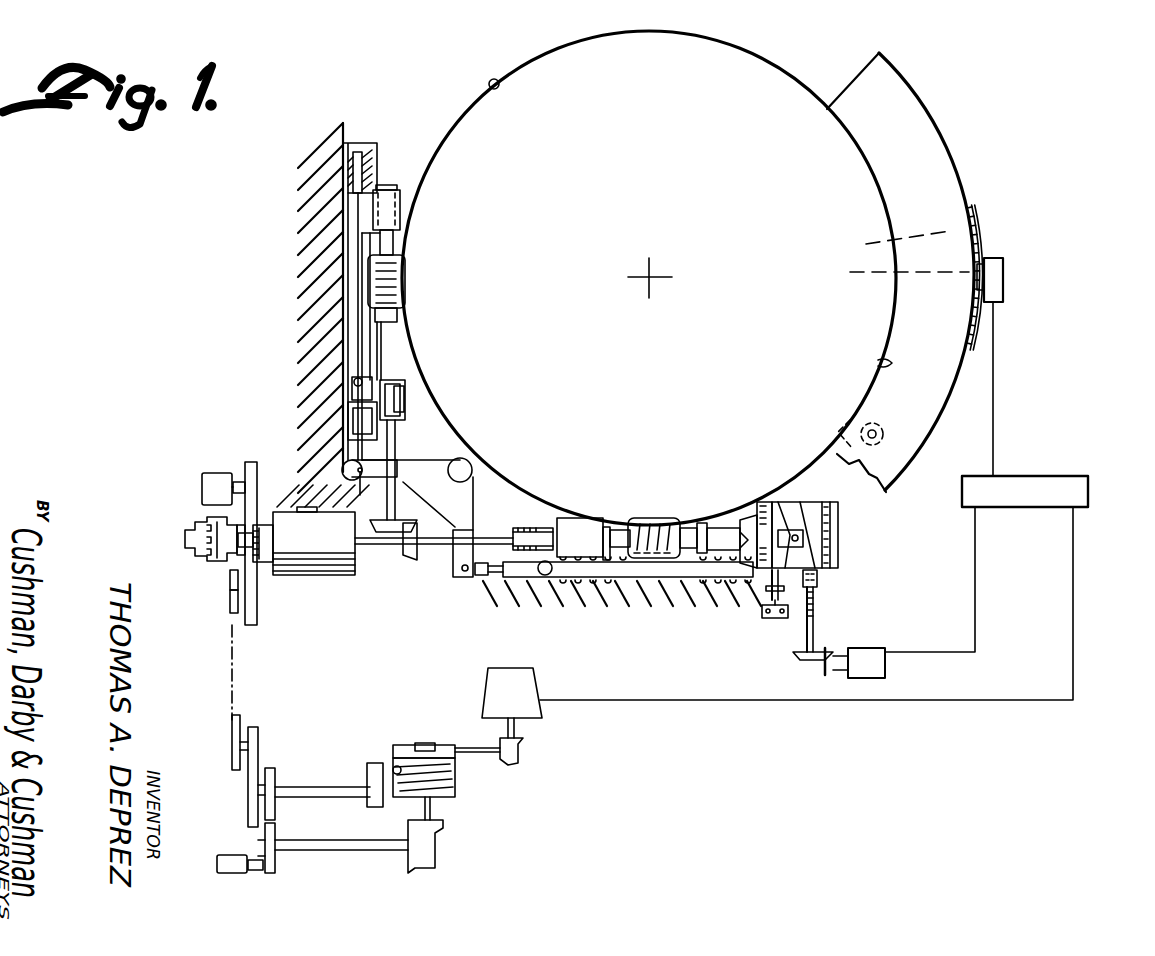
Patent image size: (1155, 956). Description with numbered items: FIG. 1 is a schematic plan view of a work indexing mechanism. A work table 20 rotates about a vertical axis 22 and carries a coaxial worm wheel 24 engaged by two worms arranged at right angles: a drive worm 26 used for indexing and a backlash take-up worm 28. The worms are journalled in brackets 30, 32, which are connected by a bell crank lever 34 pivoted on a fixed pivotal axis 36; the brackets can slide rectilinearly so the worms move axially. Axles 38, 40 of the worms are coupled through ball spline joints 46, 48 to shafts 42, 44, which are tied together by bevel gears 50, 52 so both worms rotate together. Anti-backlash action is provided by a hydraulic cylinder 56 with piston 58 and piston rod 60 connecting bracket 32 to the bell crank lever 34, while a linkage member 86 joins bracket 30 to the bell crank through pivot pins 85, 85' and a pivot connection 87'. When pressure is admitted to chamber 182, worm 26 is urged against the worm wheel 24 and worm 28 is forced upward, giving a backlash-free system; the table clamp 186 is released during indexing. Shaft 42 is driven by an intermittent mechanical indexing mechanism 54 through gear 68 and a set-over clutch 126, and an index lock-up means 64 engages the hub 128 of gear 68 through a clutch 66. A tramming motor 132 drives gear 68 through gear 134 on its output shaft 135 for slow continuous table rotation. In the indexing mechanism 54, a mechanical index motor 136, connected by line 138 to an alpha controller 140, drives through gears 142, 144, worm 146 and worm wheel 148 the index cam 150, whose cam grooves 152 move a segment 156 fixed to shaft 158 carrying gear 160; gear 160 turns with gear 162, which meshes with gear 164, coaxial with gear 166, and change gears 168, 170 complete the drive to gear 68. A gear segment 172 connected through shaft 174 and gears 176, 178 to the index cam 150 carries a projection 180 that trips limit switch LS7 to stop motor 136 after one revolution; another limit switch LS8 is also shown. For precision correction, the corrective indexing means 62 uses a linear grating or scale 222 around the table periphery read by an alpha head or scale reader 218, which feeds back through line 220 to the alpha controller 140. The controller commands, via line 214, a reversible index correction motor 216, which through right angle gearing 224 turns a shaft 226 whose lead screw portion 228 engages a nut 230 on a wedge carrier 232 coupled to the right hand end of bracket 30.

The work table 20 is at (945, 118).
The vertical axis 22 is at (655, 283).
The worm wheel 24 is at (878, 363).
The drive worm 26 is at (650, 518).
The backlash take-up worm 28 is at (405, 268).
The bracket 30 is at (673, 604).
The bracket 32 is at (375, 175).
The bell crank lever 34 is at (432, 452).
The fixed pivotal axis 36 is at (468, 478).
The axle 38 is at (618, 518).
The axle 40 is at (397, 315).
The shaft 42 is at (479, 527).
The shaft 44 is at (396, 425).
The ball spline joint 46 is at (538, 518).
The ball spline joint 48 is at (400, 395).
The bevel gear 50 is at (410, 560).
The bevel gear 52 is at (390, 532).
The mechanical indexing mechanism 54 is at (362, 738).
The hydraulic cylinder 56 is at (347, 420).
The piston 58 is at (347, 423).
The piston rod 60 is at (342, 465).
The corrective indexing means 62 is at (835, 686).
The index lock-up means 64 is at (325, 577).
The clutch 66 is at (266, 565).
The gear 68 is at (250, 523).
The pivot pin 85 is at (549, 601).
The pivot 85' is at (305, 378).
The linkage member 86 is at (515, 580).
The pin 87' is at (371, 488).
The set-over clutch 126 is at (215, 558).
The hub 128 is at (233, 590).
The tramming motor 132 is at (210, 473).
The gear 134 is at (257, 470).
The output shaft 135 is at (234, 467).
The mechanical index motor 136 is at (527, 683).
The line 138 is at (806, 604).
The alpha controller 140 is at (1080, 476).
The gear 142 is at (523, 745).
The gear 144 is at (512, 765).
The worm 146 is at (428, 743).
The worm wheel 148 is at (398, 745).
The index cam 150 is at (453, 770).
The cam grooves 152 is at (442, 795).
The segment 156 is at (367, 800).
The shaft 158 is at (333, 780).
The gear 160 is at (275, 775).
The gear 162 is at (247, 788).
The gear 164 is at (258, 745).
The gear 166 is at (232, 718).
The gear 168 is at (233, 613).
The index change gear 170 is at (255, 625).
The gear segment 172 is at (275, 830).
The shaft 174 is at (360, 850).
The gear 176 is at (418, 868).
The gear 178 is at (443, 835).
The actuator 180 is at (265, 870).
The chamber 182 is at (330, 412).
The clamp 186 is at (883, 424).
The line 214 is at (975, 565).
The index correction motor 216 is at (885, 655).
The alpha head 218 is at (1003, 285).
The line 220 is at (993, 432).
The linear grating 222 is at (977, 218).
The right angle gearing 224 is at (823, 664).
The shaft 226 is at (817, 650).
The lead screw portion 228 is at (813, 600).
The nut 230 is at (817, 578).
The wedge carrier 232 is at (838, 553).
The limit switch LS7 is at (238, 843).
The limit switch LS8 is at (762, 612).